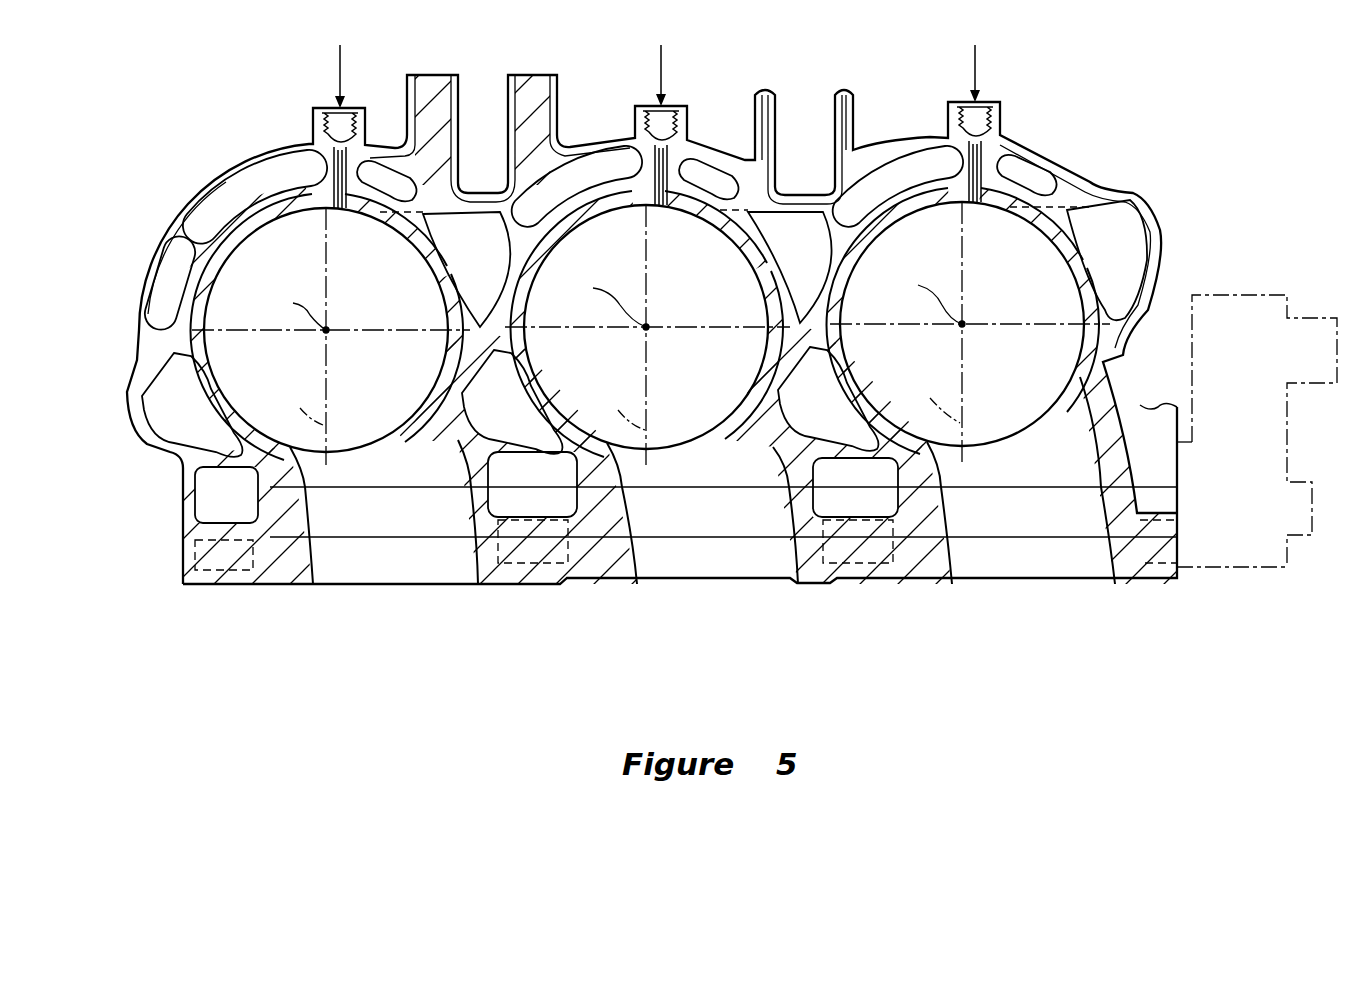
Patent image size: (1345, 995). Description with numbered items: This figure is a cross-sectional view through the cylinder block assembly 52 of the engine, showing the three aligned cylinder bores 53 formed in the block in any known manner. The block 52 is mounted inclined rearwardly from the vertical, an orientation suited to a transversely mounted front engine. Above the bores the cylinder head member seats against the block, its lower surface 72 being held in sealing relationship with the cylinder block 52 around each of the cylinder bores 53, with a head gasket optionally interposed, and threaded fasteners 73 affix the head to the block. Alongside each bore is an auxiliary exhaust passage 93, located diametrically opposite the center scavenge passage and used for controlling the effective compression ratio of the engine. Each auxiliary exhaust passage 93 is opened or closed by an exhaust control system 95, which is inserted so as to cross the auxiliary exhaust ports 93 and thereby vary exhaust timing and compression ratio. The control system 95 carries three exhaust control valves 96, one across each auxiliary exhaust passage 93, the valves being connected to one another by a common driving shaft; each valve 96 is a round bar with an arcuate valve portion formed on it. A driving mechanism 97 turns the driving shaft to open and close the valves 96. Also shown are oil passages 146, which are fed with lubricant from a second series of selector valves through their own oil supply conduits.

The cylinder block assembly 52 is at (1086, 166).
The cylinder bores 53 is at (1080, 362).
The lower surface 72 is at (467, 267).
The threaded fasteners 73 is at (233, 207).
The auxiliary exhaust passage 93 is at (1012, 460).
The exhaust control system 95 is at (1212, 292).
The exhaust control valves 96 is at (1042, 603).
The driving mechanism 97 is at (1232, 572).
The oil passages 146 is at (978, 200).